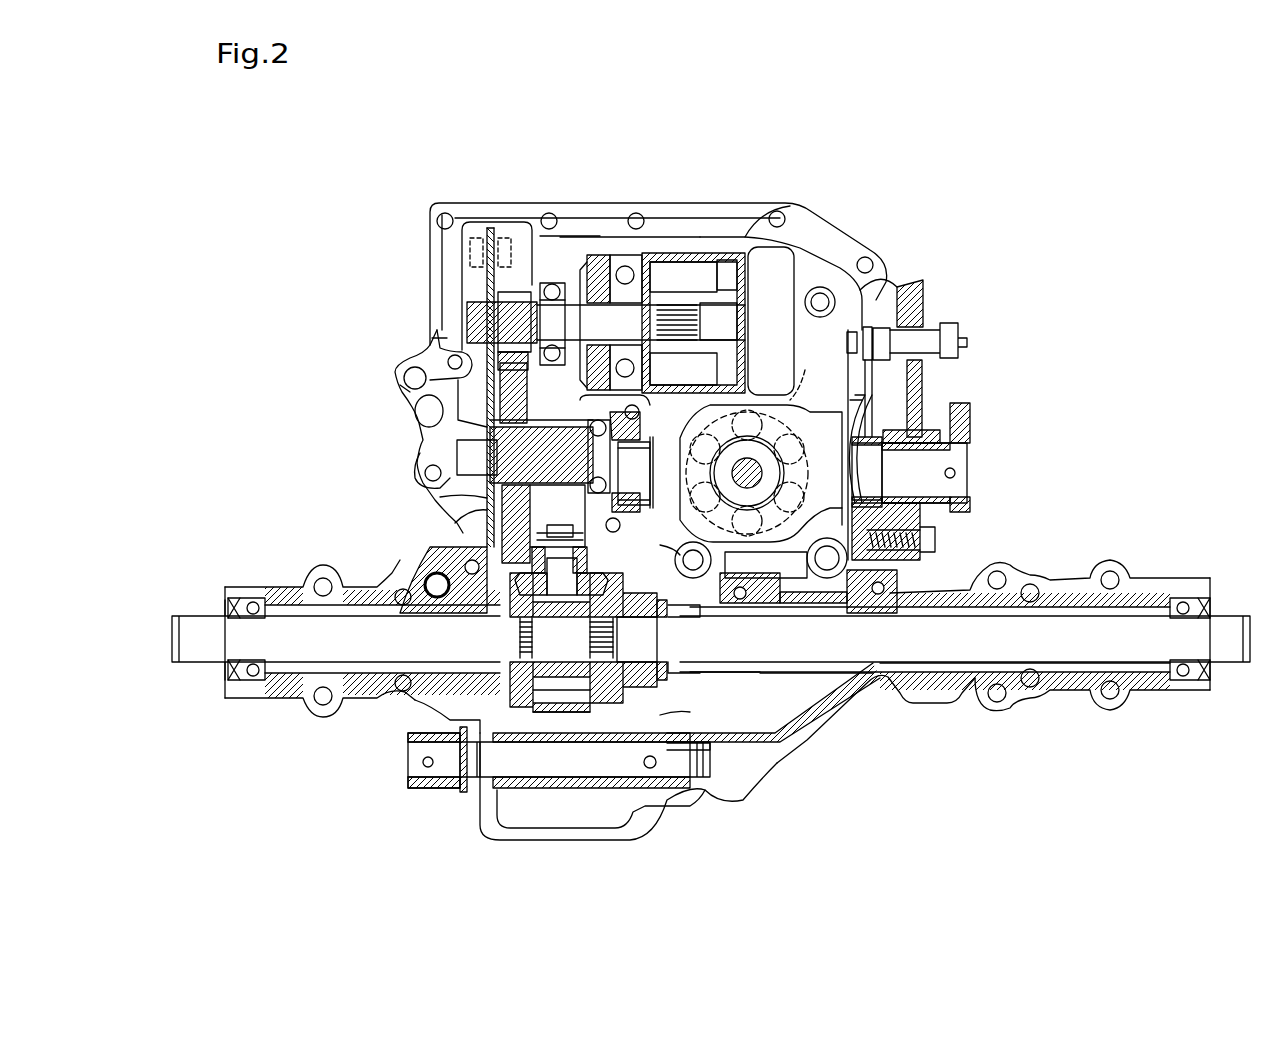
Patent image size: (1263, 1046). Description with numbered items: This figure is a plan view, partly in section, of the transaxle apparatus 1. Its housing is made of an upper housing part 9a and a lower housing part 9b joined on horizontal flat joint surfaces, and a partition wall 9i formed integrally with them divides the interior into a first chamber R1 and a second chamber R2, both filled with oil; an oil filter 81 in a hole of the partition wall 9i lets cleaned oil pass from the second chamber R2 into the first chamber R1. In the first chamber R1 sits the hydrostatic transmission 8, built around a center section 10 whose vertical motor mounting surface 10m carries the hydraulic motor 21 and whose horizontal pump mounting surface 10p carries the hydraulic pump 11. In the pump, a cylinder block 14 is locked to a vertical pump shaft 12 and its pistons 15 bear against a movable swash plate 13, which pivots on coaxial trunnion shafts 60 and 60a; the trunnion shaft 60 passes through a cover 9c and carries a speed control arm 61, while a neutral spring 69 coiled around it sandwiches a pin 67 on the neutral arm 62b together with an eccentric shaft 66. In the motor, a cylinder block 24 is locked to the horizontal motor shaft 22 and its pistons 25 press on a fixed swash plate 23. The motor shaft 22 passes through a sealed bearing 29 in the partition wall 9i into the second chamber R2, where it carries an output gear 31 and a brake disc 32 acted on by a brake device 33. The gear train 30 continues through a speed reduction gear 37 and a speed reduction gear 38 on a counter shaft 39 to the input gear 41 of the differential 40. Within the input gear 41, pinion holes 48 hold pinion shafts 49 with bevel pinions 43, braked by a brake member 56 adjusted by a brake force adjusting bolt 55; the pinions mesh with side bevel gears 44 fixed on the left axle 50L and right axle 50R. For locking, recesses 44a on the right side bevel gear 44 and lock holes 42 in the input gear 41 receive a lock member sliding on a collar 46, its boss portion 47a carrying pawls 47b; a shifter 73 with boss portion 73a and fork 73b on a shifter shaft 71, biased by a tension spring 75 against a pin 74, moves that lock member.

The transaxle apparatus 1 is at (905, 172).
The hydrostatic transmission 8 is at (703, 232).
The upper housing part 9a is at (1020, 580).
The lower housing part 9b is at (800, 210).
The cover 9c is at (925, 530).
The partition wall 9i is at (768, 662).
The center section 10 is at (826, 243).
The motor mounting surface 10m is at (770, 222).
The pump mounting surface 10p is at (727, 562).
The hydraulic pump 11 is at (830, 432).
The pump shaft 12 is at (800, 488).
The movable swash plate 13 is at (790, 545).
The cylinder block 14 is at (815, 524).
The pistons 15 is at (803, 372).
The hydraulic motor 21 is at (612, 250).
The motor shaft 22 is at (572, 290).
The fixed swash plate 23 is at (597, 255).
The cylinder block 24 is at (705, 243).
The pistons 25 is at (640, 255).
The bearing 29 is at (548, 236).
The gear train 30 is at (397, 385).
The output gear 31 is at (518, 295).
The brake disc 32 is at (491, 228).
The brake device 33 is at (479, 226).
The speed reduction gear 37 is at (445, 350).
The speed reduction gear 38 is at (415, 410).
The counter shaft 39 is at (470, 452).
The differential 40 is at (470, 722).
The input gear 41 is at (440, 497).
The lock holes 42 is at (545, 722).
The bevel pinion 43 is at (590, 570).
The side bevel gear 44 is at (462, 703).
The recesses 44a is at (615, 565).
The collar 46 is at (660, 640).
The boss portion 47a is at (652, 533).
The pawls 47b is at (610, 788).
The pinion holes 48 is at (520, 514).
The pinion shaft 49 is at (572, 590).
The left axle 50L is at (275, 658).
The right axle 50R is at (1082, 654).
The brake force adjusting bolt 55 is at (458, 520).
The brake member 56 is at (487, 548).
The trunnion shaft 60 is at (968, 476).
The trunnion shaft 60a is at (645, 479).
The speed control arm 61 is at (968, 435).
The neutral arm 62b is at (880, 383).
The eccentric shaft 66 is at (918, 315).
The pin 67 is at (880, 400).
The neutral spring 69 is at (900, 410).
The shifter shaft 71 is at (410, 764).
The shifter 73 is at (715, 712).
The boss portion 73a is at (700, 722).
The fork 73b is at (665, 714).
The pin 74 is at (675, 790).
The tension spring 75 is at (535, 788).
The oil filter 81 is at (800, 660).
The first chamber R1 is at (895, 578).
The second chamber R2 is at (796, 746).